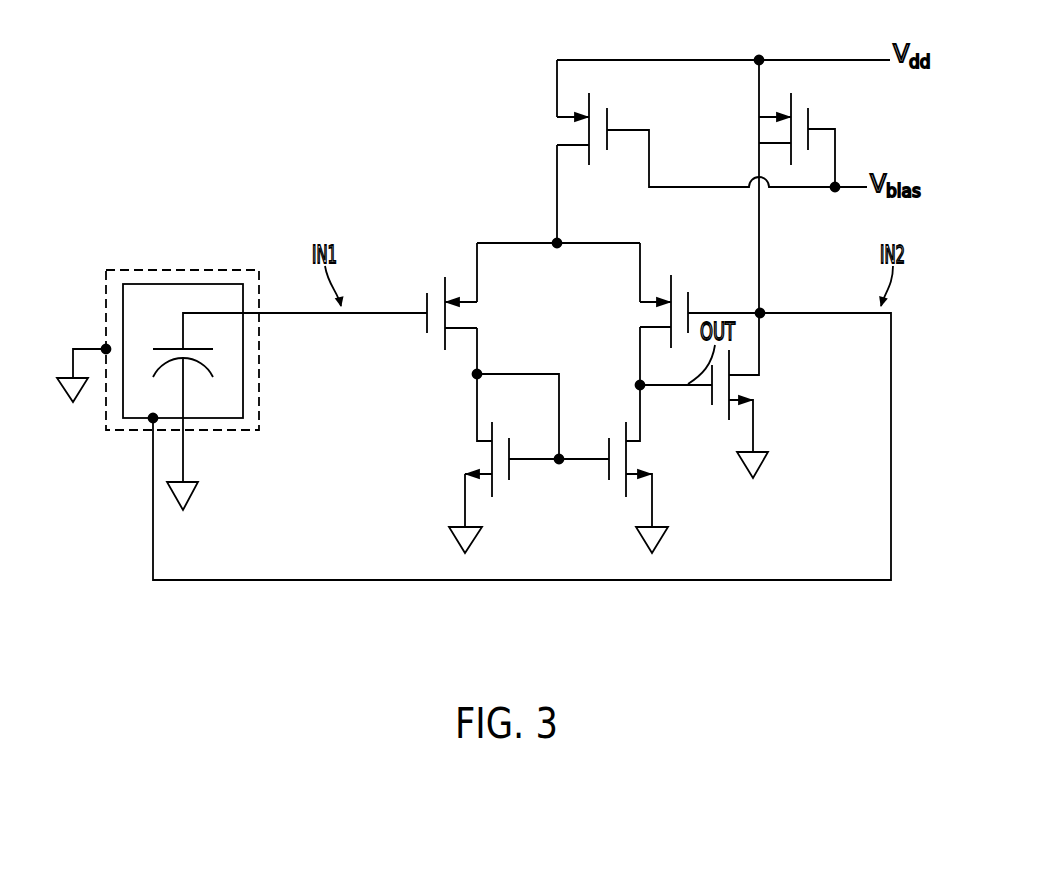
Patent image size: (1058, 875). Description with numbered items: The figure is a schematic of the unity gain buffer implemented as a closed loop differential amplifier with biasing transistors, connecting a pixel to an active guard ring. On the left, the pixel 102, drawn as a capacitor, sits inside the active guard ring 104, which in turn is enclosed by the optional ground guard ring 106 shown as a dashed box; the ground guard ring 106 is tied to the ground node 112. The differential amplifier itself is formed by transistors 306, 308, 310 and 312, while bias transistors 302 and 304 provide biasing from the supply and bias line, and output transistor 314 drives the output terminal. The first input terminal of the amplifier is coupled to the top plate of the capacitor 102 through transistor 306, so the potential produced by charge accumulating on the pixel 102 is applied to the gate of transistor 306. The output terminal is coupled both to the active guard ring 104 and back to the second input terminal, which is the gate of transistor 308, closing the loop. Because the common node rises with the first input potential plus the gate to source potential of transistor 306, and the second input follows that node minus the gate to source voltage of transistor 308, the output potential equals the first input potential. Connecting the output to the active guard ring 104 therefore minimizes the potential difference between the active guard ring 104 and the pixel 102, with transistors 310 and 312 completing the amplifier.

The pixel 102 is at (157, 336).
The active guard ring 104 is at (165, 278).
The ground guard ring 106 is at (222, 262).
The ground node 112 is at (65, 402).
The bias transistor 302 is at (556, 127).
The bias transistor 304 is at (804, 103).
The transistor 306 is at (434, 276).
The transistor 308 is at (681, 281).
The transistor 310 is at (474, 458).
The transistor 312 is at (649, 456).
The output transistor 314 is at (753, 386).